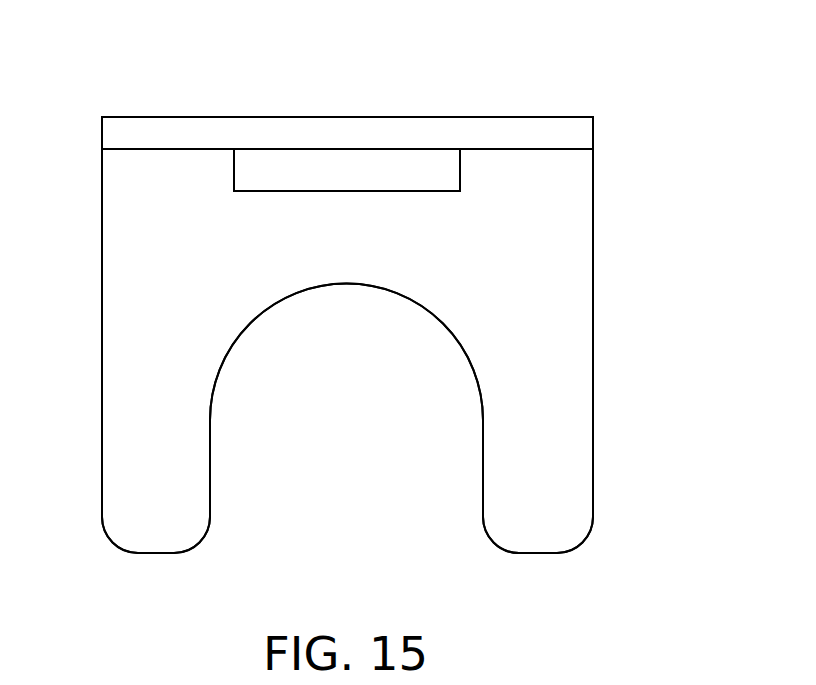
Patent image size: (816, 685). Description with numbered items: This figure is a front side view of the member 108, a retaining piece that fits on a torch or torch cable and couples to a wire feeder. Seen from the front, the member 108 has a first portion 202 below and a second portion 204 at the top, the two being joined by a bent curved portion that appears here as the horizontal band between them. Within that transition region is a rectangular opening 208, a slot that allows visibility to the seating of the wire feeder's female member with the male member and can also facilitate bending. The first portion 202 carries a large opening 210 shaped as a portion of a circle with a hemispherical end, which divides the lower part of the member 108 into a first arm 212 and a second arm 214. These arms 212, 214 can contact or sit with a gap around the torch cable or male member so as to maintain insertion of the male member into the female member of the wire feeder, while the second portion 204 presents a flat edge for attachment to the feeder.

The member 108 is at (689, 60).
The first portion 202 is at (76, 316).
The second portion 204 is at (593, 142).
The opening 208 is at (363, 181).
The opening 210 is at (364, 420).
The first arm 212 is at (558, 523).
The second arm 214 is at (176, 523).